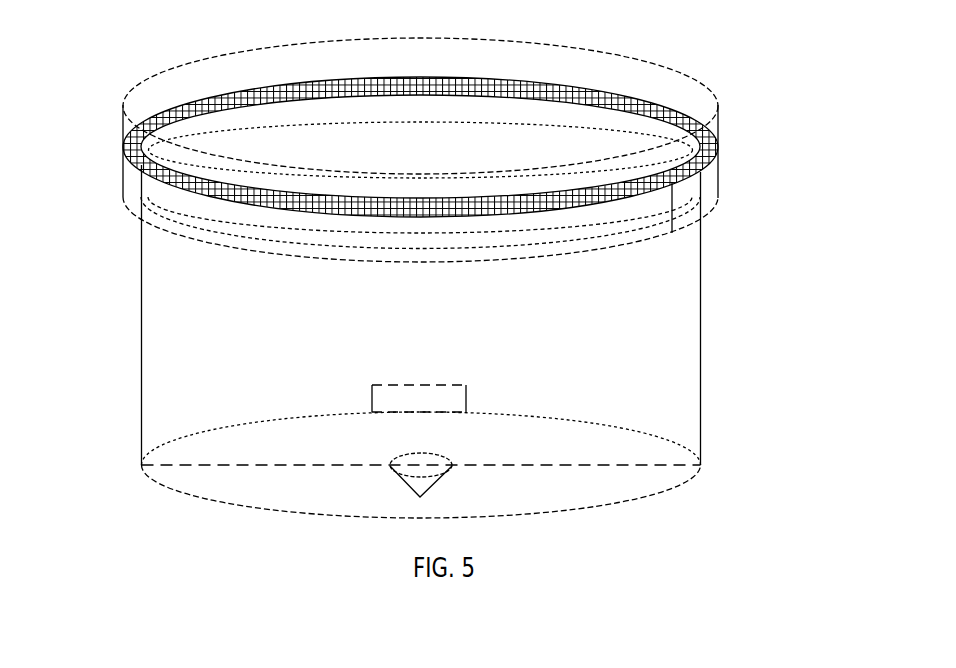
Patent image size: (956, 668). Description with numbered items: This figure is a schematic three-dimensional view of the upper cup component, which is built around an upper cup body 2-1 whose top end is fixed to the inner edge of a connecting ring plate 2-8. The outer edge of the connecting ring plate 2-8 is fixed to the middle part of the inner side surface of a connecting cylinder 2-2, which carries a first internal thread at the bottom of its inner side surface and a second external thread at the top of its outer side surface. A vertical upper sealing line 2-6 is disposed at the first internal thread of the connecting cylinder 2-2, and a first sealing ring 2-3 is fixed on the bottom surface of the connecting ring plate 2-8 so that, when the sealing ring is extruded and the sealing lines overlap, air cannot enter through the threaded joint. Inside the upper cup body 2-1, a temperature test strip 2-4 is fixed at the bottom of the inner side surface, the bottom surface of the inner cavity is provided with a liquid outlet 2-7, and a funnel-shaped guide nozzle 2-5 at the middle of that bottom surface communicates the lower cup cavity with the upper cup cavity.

The upper cup body 2-1 is at (142, 315).
The connecting cylinder 2-2 is at (718, 133).
The first sealing ring 2-3 is at (590, 207).
The temperature test strip 2-4 is at (443, 400).
The guide nozzle 2-5 is at (424, 490).
The upper sealing line 2-6 is at (672, 217).
The liquid outlet 2-7 is at (417, 467).
The connecting ring plate 2-8 is at (347, 110).